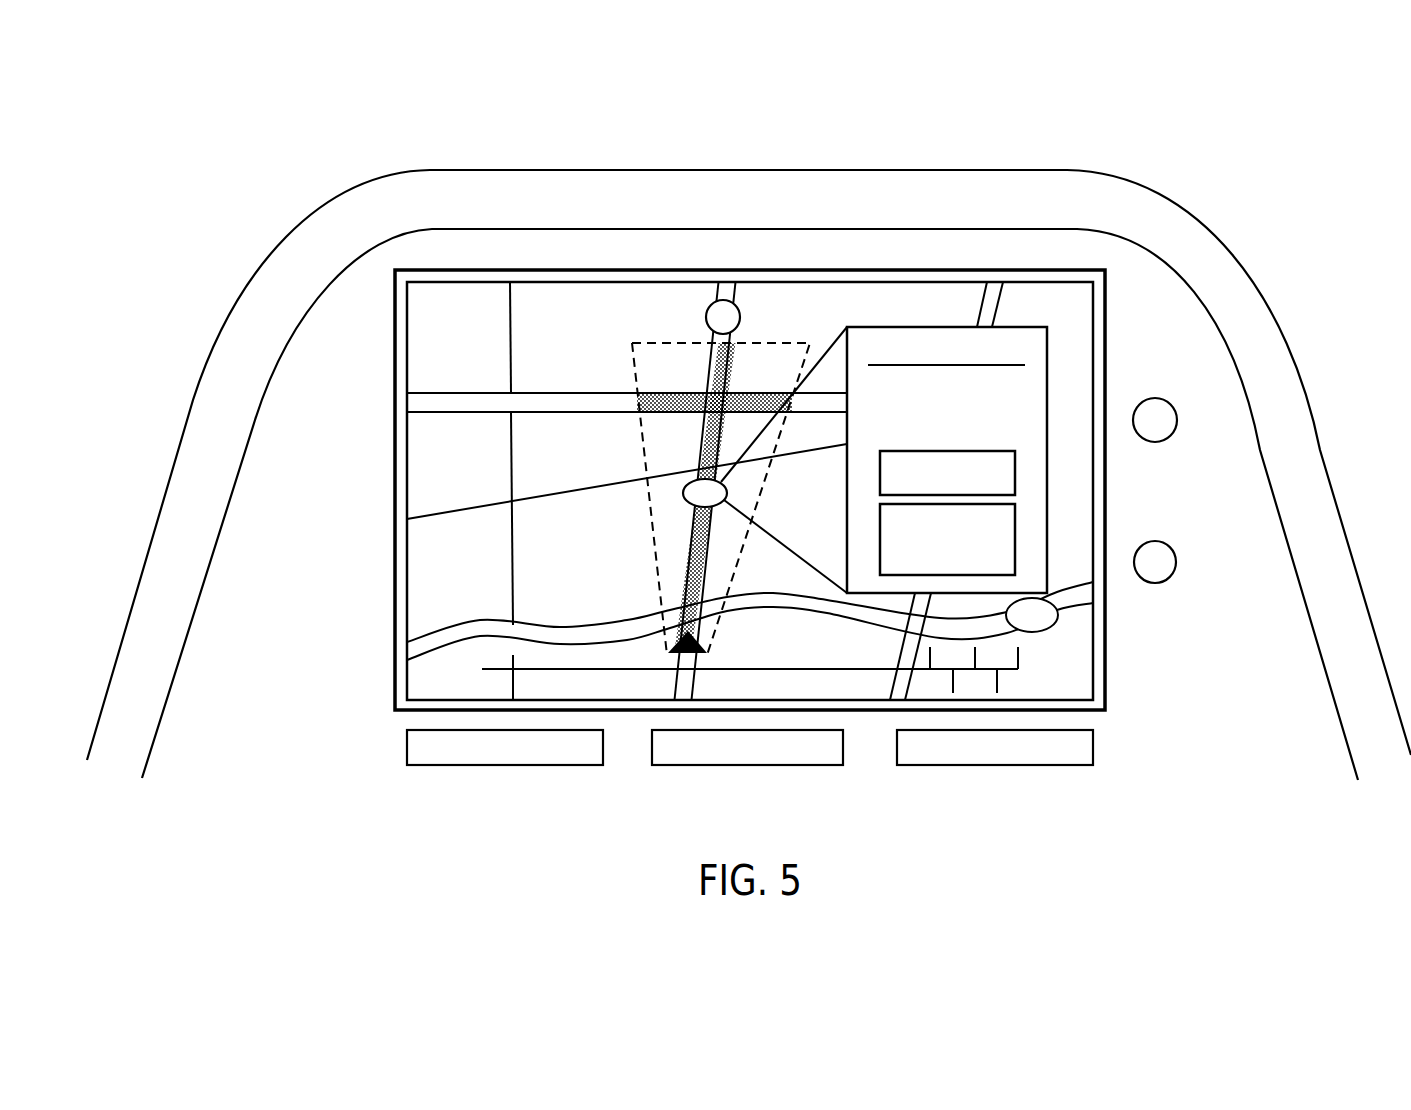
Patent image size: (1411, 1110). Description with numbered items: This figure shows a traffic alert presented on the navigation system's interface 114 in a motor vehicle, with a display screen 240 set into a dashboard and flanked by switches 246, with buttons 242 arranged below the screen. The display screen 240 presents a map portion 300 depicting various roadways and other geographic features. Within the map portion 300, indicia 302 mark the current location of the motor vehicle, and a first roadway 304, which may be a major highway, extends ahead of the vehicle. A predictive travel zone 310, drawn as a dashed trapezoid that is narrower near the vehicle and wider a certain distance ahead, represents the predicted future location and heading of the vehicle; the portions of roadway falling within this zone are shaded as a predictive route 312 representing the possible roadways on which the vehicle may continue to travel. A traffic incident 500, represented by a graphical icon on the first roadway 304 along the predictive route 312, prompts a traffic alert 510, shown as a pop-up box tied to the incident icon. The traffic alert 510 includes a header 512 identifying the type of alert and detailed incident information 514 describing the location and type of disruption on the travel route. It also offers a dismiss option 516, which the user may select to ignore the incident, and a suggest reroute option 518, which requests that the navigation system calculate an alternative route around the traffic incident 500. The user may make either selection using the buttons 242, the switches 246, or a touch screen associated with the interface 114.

The interface 114 is at (858, 268).
The display screen 240 is at (1072, 297).
The buttons 242 is at (1158, 748).
The switches 246 is at (1177, 427).
The map portion 300 is at (437, 454).
The indicia 302 is at (707, 657).
The first roadway 304 is at (740, 287).
The predictive travel zone 310 is at (632, 343).
The predictive route 312 is at (700, 418).
The traffic incident 500 is at (678, 497).
The traffic alert 510 is at (930, 327).
The header 512 is at (1036, 351).
The detailed incident information 514 is at (1026, 403).
The dismiss option 516 is at (1032, 464).
The suggest reroute option 518 is at (1032, 548).